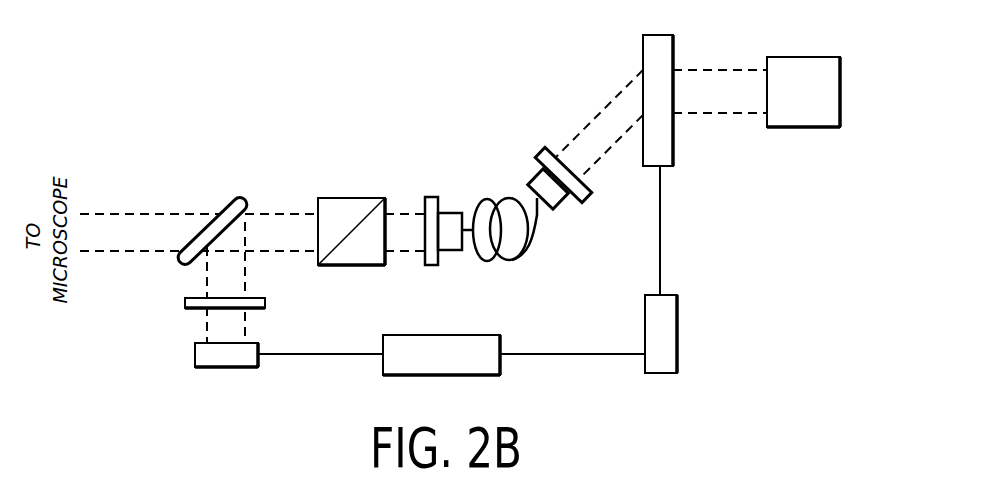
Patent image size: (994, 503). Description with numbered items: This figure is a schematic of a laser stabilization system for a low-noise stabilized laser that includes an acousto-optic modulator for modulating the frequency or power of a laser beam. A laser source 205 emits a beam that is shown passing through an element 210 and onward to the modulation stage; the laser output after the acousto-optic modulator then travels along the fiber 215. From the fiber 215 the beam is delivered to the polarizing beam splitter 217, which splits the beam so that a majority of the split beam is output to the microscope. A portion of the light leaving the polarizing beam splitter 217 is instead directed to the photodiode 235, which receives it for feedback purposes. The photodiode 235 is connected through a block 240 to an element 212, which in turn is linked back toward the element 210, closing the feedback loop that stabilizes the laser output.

The laser light source 205 is at (807, 57).
The beam steering element 210 is at (643, 42).
The controller 212 is at (677, 323).
The fiber 215 is at (567, 238).
The polarizing beam splitter 217 is at (327, 198).
The photodiode 235 is at (195, 350).
The amplifier 240 is at (492, 335).